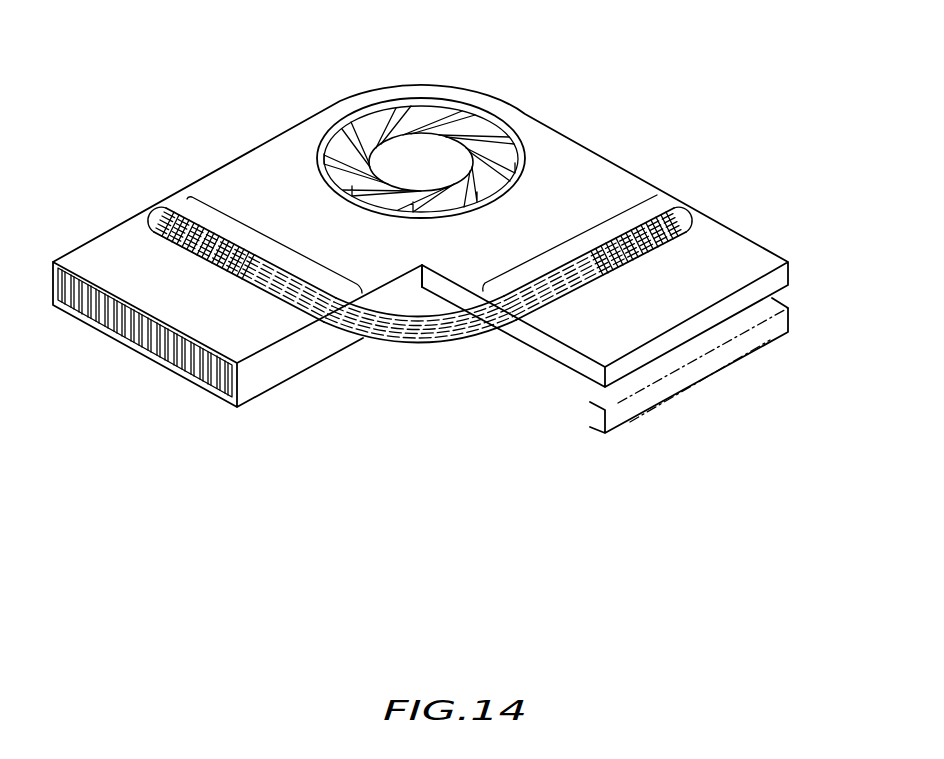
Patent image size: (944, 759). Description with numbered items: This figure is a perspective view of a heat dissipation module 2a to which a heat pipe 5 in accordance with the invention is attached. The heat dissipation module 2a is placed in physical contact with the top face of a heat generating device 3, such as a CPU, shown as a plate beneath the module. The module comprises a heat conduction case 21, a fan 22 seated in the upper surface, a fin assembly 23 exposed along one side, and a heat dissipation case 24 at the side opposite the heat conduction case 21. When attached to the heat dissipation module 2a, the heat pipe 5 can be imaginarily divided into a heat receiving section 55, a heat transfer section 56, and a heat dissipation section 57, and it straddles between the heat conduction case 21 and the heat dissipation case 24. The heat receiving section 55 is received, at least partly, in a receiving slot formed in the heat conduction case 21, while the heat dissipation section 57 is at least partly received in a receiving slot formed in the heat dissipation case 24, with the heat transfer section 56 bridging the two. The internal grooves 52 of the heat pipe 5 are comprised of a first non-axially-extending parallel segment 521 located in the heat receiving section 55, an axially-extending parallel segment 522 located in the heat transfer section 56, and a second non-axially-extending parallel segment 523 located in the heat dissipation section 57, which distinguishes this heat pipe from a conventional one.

The heat dissipation module 2a is at (469, 265).
The heat conduction case 21 is at (722, 247).
The fan 22 is at (438, 143).
The fin assembly 23 is at (160, 393).
The heat dissipation case 24 is at (128, 240).
The heat generating device 3 is at (763, 333).
The heat pipe 5 is at (420, 399).
The internal grooves 52 is at (420, 374).
The first non-axially-extending parallel segment 521 is at (618, 257).
The axially-extending parallel segment 522 is at (403, 347).
The second non-axially-extending parallel segment 523 is at (218, 265).
The heat receiving section 55 is at (580, 230).
The heat transfer section 56 is at (453, 268).
The heat dissipation section 57 is at (300, 240).